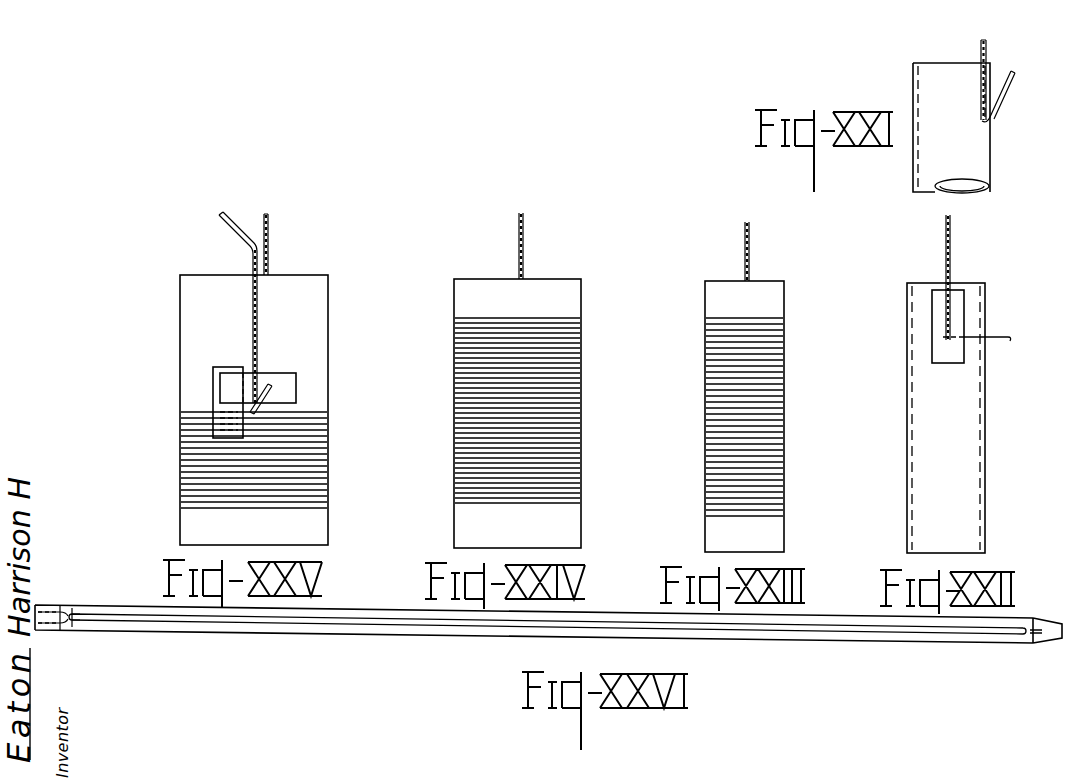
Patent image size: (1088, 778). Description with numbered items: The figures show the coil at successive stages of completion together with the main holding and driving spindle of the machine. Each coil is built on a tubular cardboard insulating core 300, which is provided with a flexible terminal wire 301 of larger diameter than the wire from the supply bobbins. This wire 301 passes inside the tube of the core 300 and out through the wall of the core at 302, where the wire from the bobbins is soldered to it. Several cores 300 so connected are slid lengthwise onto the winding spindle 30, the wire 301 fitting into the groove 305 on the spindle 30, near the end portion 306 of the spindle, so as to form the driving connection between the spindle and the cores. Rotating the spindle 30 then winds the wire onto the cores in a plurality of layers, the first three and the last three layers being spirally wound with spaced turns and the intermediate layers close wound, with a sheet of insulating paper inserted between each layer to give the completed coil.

In FIG. 26, the winding spindle 30 is at (557, 632).
In FIG. 21, the cardboard insulating core 300 is at (972, 152).
In FIG. 22, the cardboard insulating core 300 is at (975, 437).
In FIG. 21, the flexible terminal wire 301 is at (989, 46).
In FIG. 21, the wire passage through core wall 302 is at (1012, 82).
In FIG. 26, the groove 305 is at (100, 617).
In FIG. 26, the end cap 306 is at (62, 612).